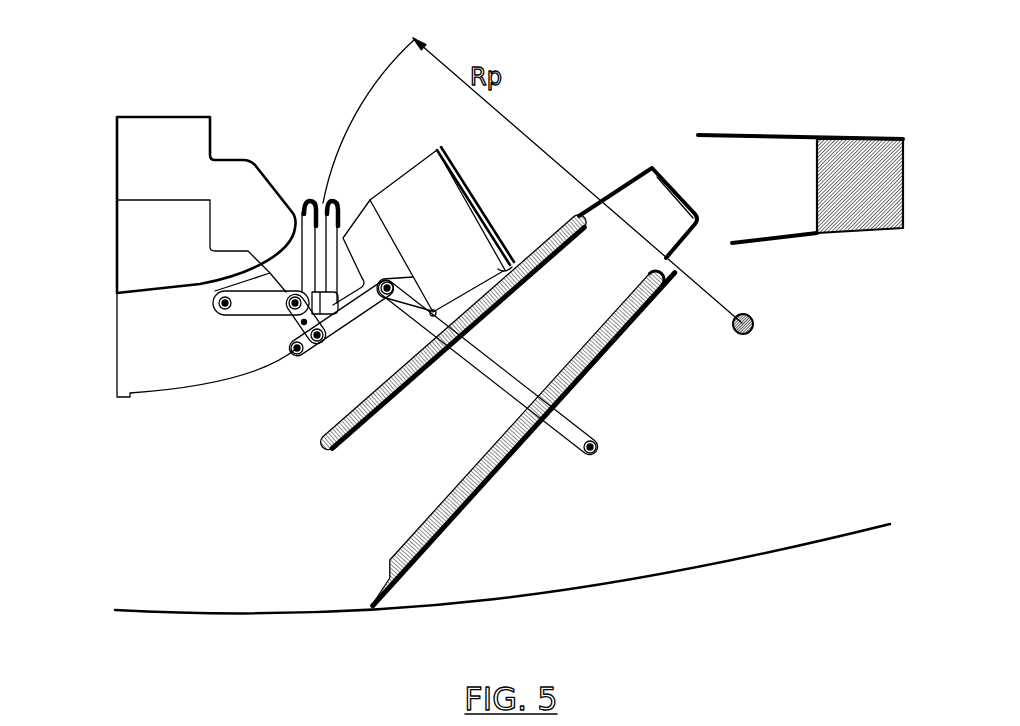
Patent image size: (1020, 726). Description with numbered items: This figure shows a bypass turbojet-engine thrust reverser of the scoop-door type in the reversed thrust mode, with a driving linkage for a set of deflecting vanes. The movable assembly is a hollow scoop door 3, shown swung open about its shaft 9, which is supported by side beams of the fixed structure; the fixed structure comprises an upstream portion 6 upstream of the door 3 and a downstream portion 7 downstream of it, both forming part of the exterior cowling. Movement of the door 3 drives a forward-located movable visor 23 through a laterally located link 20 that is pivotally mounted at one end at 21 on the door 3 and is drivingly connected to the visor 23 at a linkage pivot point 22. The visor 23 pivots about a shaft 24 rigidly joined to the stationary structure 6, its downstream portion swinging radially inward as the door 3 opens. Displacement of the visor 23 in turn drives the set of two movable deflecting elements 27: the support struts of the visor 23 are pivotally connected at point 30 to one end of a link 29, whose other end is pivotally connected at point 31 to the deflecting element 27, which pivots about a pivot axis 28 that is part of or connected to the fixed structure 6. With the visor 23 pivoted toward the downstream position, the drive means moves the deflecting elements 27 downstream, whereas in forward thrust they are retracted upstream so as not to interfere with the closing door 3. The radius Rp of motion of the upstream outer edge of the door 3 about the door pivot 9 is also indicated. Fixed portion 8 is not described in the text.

The scoop door 3 is at (590, 243).
The upstream portion of fixed structure 6 is at (131, 92).
The downstream portion of fixed structure 7 is at (832, 151).
The fixed jaw body 8 is at (143, 192).
The shaft 9 is at (744, 336).
The link 20 is at (560, 430).
The pivot mount 21 is at (589, 440).
The linkage pivot point 22 is at (392, 281).
The movable visor 23 is at (447, 225).
The shaft 24 is at (297, 357).
The deflecting elements 27 is at (307, 198).
The pivot axis 28 is at (217, 303).
The link 29 is at (300, 323).
The pivot point 30 is at (320, 341).
The pivot point 31 is at (295, 296).